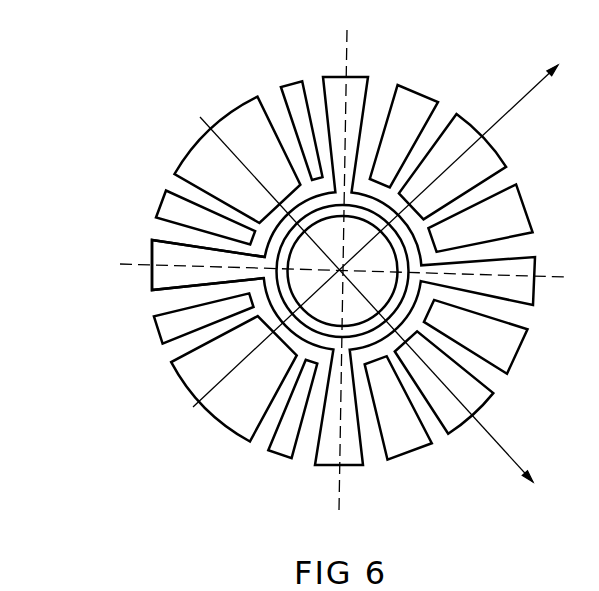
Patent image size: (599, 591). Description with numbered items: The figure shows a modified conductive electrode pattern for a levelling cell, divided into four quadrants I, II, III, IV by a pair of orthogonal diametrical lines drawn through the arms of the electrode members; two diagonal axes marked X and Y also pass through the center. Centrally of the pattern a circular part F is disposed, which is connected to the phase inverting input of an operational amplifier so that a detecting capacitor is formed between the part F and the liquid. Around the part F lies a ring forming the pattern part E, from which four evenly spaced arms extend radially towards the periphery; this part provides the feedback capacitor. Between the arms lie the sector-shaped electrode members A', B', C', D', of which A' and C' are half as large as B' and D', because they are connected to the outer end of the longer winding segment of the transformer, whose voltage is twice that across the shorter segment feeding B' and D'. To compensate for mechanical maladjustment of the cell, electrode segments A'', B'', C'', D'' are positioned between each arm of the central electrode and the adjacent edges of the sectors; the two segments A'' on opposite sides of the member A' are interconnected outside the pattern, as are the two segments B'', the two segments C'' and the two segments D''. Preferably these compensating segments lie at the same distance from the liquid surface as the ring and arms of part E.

The electrode member A' is at (444, 399).
The electrode segments A'' is at (446, 419).
The electrode member B' is at (238, 148).
The electrode segments B'' is at (239, 132).
The electrode member C' is at (452, 150).
The electrode segments C'' is at (451, 136).
The electrode member D' is at (234, 380).
The electrode segments D'' is at (235, 410).
The pattern part E is at (167, 253).
The circular part F is at (387, 282).
The quadrant I is at (498, 59).
The quadrant II is at (122, 52).
The quadrant III is at (123, 380).
The quadrant IV is at (547, 387).
The X axis X is at (377, 310).
The Y axis Y is at (384, 230).